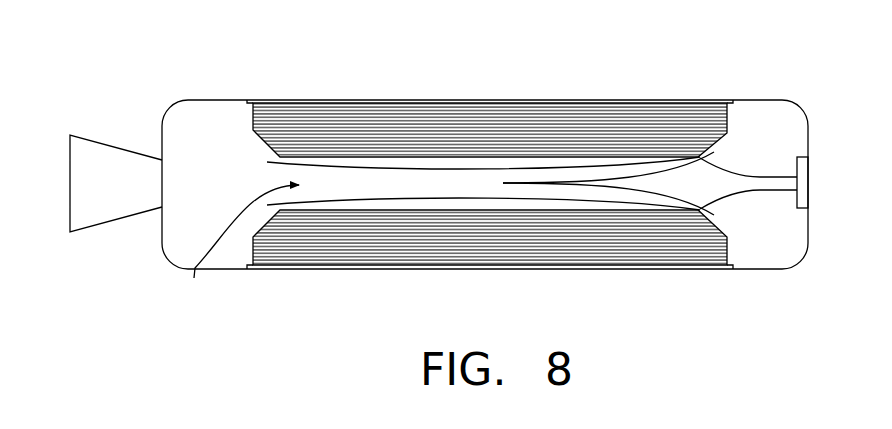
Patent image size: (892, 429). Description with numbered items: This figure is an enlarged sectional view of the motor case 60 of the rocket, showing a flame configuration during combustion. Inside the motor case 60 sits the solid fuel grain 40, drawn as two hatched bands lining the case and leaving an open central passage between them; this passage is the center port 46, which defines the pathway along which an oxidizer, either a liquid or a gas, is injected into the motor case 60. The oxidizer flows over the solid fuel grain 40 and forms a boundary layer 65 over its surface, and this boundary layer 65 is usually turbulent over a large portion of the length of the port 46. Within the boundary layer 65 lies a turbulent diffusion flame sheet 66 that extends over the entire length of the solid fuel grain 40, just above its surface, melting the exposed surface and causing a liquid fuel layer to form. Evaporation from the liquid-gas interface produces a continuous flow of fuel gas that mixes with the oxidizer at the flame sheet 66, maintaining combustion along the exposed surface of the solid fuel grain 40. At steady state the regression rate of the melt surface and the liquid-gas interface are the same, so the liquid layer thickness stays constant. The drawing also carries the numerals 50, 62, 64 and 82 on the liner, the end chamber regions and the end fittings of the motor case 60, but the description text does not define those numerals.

The solid fuel grain 40 is at (387, 121).
The center port 46 is at (241, 238).
The liner / substrate shell 50 is at (270, 100).
The motor case 60 is at (768, 100).
The outlet chamber 62 is at (775, 144).
The inlet chamber 64 is at (206, 193).
The boundary layer 65 is at (660, 160).
The turbulent diffusion flame sheet 66 is at (442, 169).
The inlet/outlet port 82 is at (95, 208).